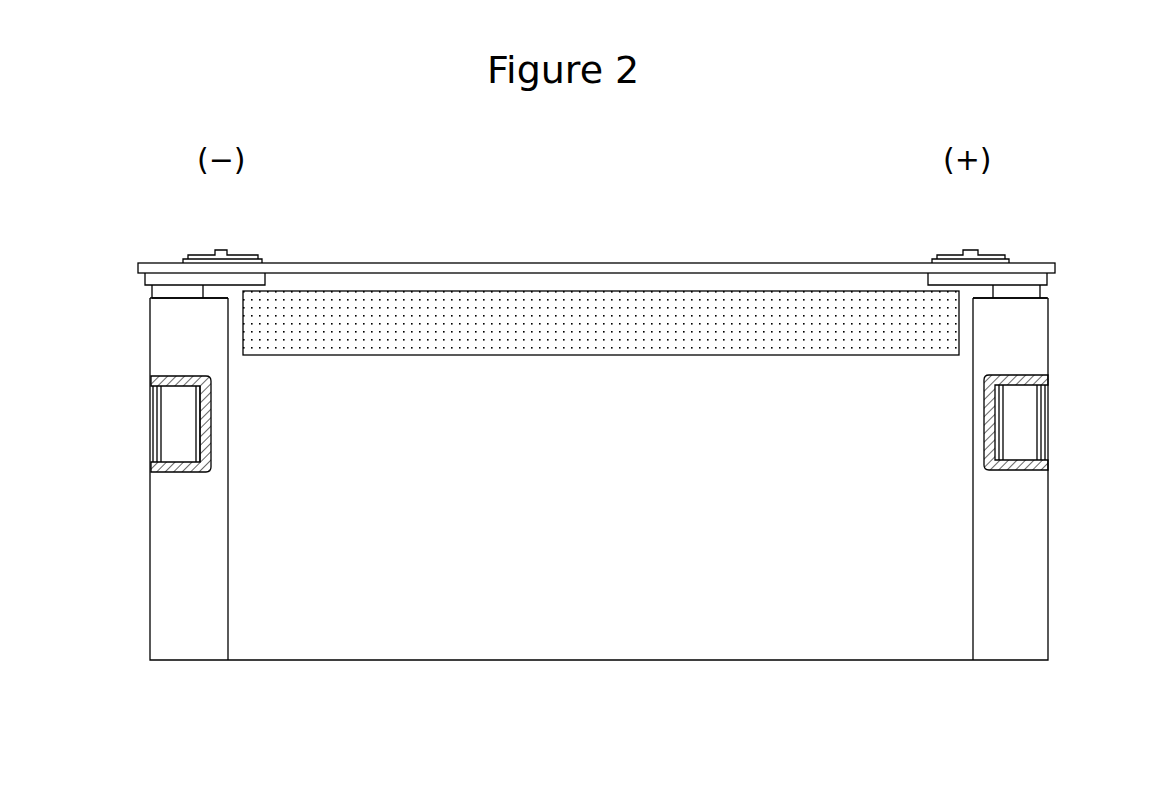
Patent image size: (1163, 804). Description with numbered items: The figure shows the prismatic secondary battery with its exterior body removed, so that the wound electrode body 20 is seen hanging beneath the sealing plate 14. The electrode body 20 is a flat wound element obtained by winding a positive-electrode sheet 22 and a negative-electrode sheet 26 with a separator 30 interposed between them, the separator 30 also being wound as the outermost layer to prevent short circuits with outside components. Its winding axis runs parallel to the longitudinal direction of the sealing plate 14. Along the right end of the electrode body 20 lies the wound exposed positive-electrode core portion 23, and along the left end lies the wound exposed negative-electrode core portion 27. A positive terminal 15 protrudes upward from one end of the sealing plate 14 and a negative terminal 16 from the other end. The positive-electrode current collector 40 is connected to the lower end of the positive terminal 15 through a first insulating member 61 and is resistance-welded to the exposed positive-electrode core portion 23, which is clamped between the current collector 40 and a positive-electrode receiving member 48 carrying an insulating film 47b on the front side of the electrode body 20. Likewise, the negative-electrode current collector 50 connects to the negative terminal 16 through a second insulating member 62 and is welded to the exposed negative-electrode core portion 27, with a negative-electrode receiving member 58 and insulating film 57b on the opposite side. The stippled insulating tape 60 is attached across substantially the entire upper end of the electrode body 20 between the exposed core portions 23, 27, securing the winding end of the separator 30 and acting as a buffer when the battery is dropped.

The sealing plate 14 is at (678, 262).
The positive terminal 15 is at (968, 250).
The negative terminal 16 is at (226, 255).
The wound electrode body 20 is at (605, 634).
The positive-electrode sheet 22 is at (1032, 555).
The exposed positive-electrode core portion 23 is at (1022, 612).
The negative-electrode sheet 26 is at (168, 556).
The exposed negative-electrode core portion 27 is at (178, 617).
The separator 30 is at (680, 628).
The positive-electrode current collector 40 is at (1020, 295).
The insulating film 47b is at (1017, 477).
The positive-electrode receiving member 48 is at (1022, 425).
The negative-electrode current collector 50 is at (180, 300).
The insulating film 57b is at (180, 478).
The negative-electrode receiving member 58 is at (178, 427).
The insulating tape 60 is at (685, 340).
The first insulating member 61 is at (1032, 270).
The second insulating member 62 is at (168, 270).